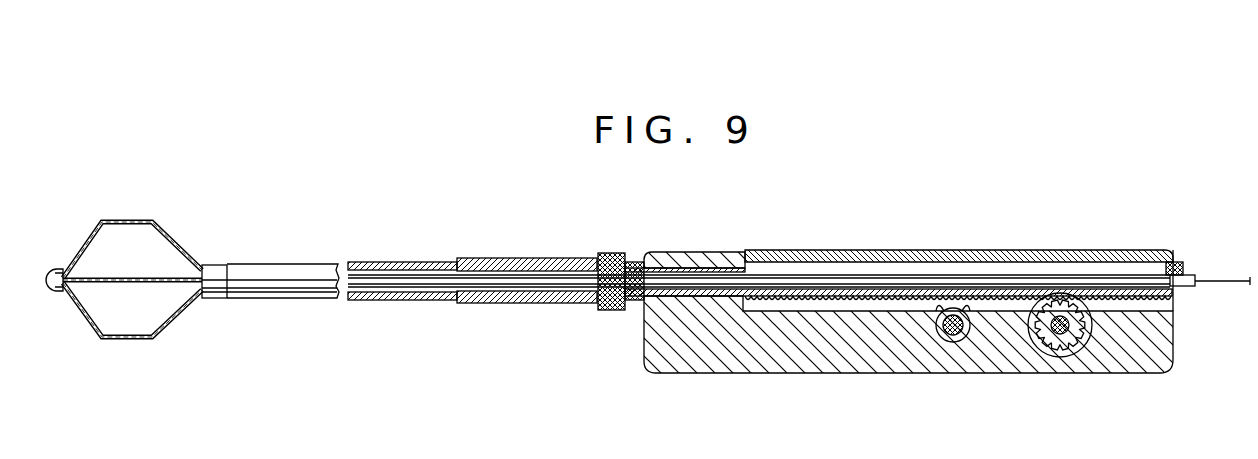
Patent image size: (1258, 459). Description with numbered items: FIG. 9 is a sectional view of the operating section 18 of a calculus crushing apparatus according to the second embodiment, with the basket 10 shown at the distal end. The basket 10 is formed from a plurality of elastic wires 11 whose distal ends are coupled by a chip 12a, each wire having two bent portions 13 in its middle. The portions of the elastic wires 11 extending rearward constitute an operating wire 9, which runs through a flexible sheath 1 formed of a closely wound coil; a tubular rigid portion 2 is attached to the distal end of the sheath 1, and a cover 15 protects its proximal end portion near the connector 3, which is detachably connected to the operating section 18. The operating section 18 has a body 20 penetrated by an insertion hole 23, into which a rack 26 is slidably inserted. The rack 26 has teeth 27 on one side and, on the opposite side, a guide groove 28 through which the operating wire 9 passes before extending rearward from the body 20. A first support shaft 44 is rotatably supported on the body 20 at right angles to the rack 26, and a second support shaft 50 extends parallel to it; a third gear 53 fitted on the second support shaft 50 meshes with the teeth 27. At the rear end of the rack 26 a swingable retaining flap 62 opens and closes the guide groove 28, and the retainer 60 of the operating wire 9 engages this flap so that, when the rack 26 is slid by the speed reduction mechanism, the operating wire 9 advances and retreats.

The flexible sheath 1 is at (290, 264).
The tubular rigid portion 2 is at (224, 265).
The connector 3 is at (605, 311).
The operating wire 9 is at (688, 275).
The basket 10 is at (137, 277).
The elastic wires 11 is at (181, 243).
The chip 12a is at (52, 293).
The bent portions 13 is at (102, 221).
The cover 15 is at (495, 304).
The operating section 18 is at (919, 335).
The body 20 is at (735, 374).
The insertion hole 23 is at (908, 312).
The rack 26 is at (898, 355).
The teeth 27 is at (845, 304).
The guide groove 28 is at (940, 268).
The first support shaft 44 is at (953, 336).
The second support shaft 50 is at (1059, 339).
The third gear 53 is at (1080, 353).
The retainer 60 is at (1190, 287).
The retaining flap 62 is at (1178, 262).